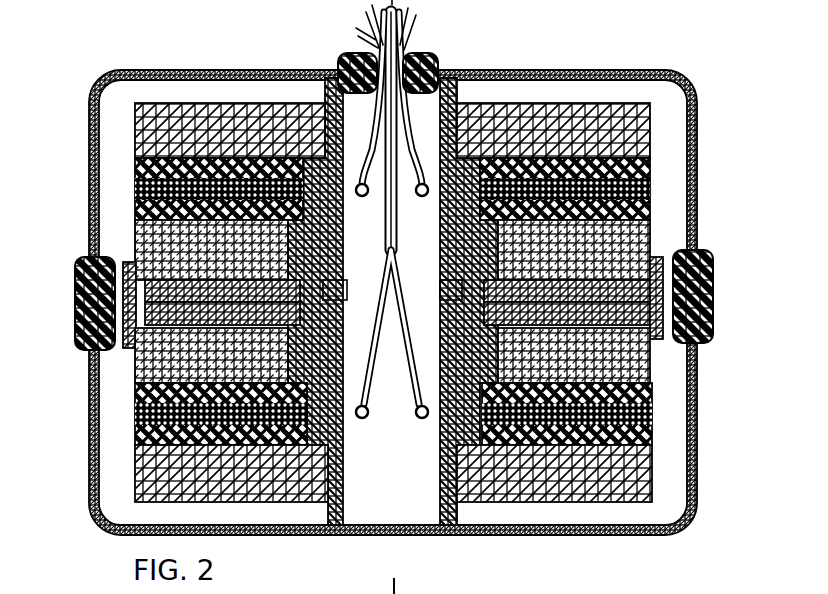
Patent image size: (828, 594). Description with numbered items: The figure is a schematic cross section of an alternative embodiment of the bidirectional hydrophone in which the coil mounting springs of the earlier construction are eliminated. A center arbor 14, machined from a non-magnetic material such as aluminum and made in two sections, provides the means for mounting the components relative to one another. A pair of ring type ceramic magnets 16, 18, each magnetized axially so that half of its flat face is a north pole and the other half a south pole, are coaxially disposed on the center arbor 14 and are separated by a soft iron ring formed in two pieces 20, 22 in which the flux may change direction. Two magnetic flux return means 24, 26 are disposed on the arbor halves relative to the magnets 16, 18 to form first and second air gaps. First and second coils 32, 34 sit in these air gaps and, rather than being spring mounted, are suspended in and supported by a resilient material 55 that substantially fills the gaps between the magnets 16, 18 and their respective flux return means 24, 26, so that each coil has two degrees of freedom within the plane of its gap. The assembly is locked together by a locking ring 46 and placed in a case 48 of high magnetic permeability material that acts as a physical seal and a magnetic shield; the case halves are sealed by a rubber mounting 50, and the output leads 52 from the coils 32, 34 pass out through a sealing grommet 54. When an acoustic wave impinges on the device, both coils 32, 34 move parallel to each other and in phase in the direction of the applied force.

The center arbor 14 is at (446, 436).
The ring type ceramic magnet 16 is at (147, 242).
The ring type ceramic magnet 18 is at (147, 370).
The soft iron ring piece 20 is at (625, 289).
The soft iron ring piece 22 is at (625, 309).
The magnetic flux return means 24 is at (205, 108).
The magnetic flux return means 26 is at (637, 469).
The first coil 32 is at (651, 181).
The second coil 34 is at (652, 423).
The locking ring 46 is at (123, 293).
The case 48 is at (95, 480).
The rubber mounting 50 is at (80, 334).
The output leads 52 is at (372, 45).
The sealing grommet 54 is at (434, 64).
The resilient material 55 is at (137, 178).